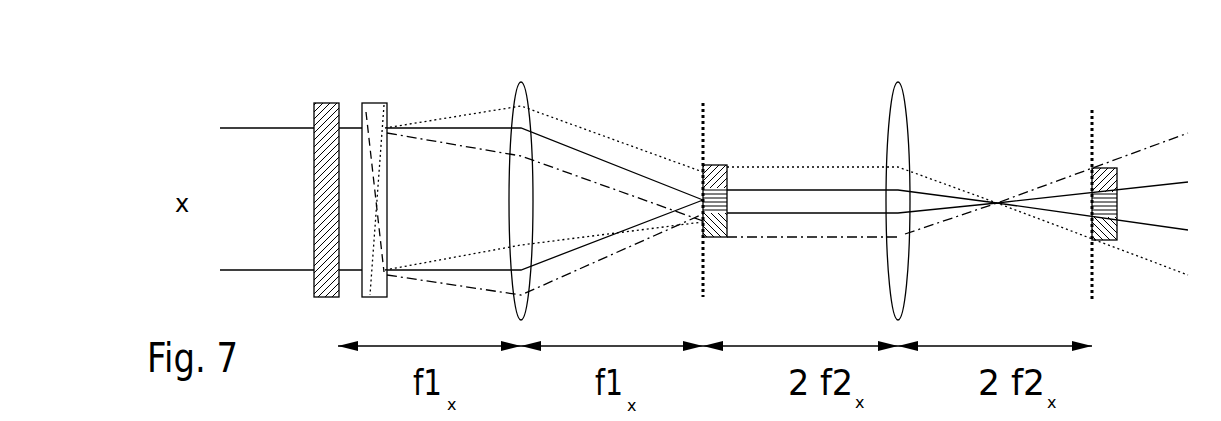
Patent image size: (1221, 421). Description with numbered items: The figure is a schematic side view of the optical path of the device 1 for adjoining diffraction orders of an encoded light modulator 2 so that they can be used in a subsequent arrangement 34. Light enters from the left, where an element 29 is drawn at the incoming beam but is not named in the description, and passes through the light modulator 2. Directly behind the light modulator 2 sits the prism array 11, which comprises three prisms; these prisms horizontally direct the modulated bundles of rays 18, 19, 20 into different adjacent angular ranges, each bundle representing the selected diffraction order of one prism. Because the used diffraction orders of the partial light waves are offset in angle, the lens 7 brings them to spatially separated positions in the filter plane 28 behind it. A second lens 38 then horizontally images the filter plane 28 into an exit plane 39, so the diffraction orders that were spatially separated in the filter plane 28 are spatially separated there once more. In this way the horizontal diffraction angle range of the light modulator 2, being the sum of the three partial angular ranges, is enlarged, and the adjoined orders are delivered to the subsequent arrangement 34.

The device 1 is at (631, 92).
The encoded light modulator 2 is at (320, 118).
The lens 7 is at (526, 302).
The prism array 11 is at (387, 109).
The bundle of rays 18 is at (497, 254).
The bundle of rays 19 is at (447, 275).
The bundle of rays 20 is at (483, 290).
The filter plane 28 is at (708, 117).
The incoming light beam 29 is at (262, 130).
The subsequent arrangement 34 is at (1023, 40).
The lens 38 is at (897, 103).
The exit plane 39 is at (1093, 125).